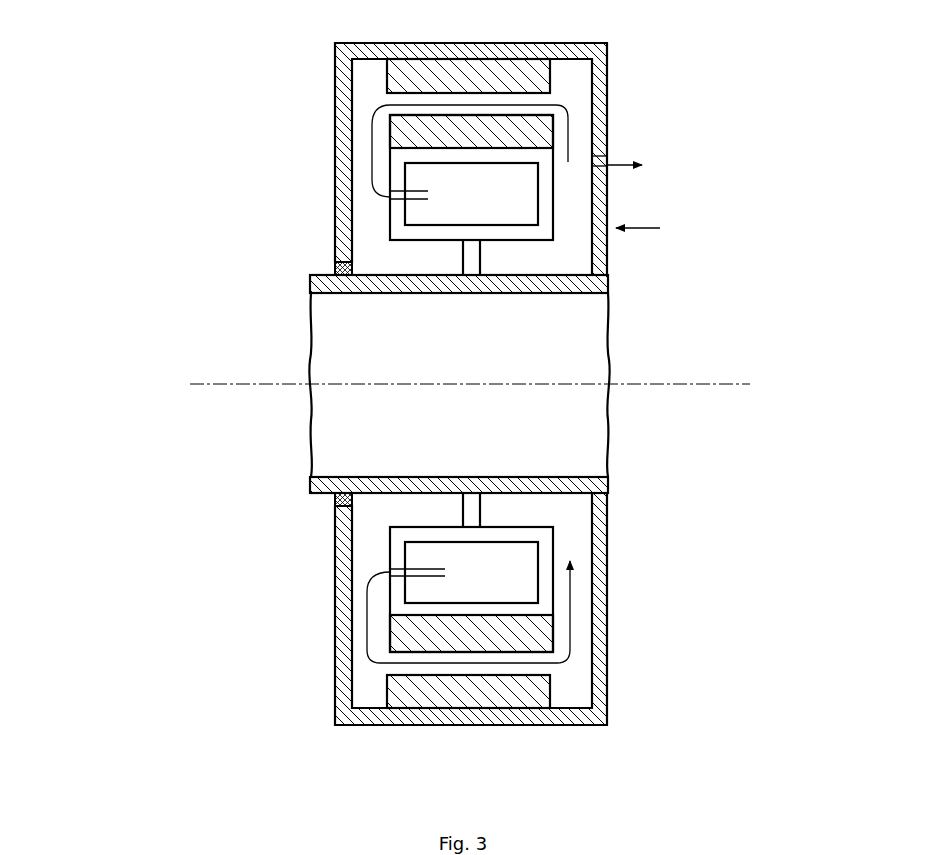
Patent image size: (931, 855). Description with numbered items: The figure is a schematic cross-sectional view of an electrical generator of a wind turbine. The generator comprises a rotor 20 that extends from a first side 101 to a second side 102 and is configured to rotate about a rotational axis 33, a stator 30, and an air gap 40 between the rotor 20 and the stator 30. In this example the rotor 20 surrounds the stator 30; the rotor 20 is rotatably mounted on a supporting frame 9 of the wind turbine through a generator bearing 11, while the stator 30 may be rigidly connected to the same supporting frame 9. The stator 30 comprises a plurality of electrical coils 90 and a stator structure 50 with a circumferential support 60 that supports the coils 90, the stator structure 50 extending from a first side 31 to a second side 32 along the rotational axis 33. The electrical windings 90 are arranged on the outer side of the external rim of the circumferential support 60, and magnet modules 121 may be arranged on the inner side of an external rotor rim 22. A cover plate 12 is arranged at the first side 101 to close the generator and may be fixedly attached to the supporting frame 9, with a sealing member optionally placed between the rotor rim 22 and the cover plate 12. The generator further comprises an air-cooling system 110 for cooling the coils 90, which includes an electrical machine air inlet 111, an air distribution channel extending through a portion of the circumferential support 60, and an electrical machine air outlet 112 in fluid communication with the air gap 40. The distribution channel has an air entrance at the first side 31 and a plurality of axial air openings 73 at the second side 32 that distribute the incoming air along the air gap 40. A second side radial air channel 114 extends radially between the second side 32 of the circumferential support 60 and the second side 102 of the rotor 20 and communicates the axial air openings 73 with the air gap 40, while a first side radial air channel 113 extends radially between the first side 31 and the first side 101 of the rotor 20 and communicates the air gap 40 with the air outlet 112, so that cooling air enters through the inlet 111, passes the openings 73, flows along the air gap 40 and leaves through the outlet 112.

The supporting frame 9 is at (340, 472).
The generator bearing 11 is at (330, 270).
The cover plate 12 is at (608, 75).
The rotor 20 is at (335, 608).
The external rotor rim 22 is at (575, 705).
The stator 30 is at (593, 597).
The first side 31 is at (592, 253).
The second side 32 is at (365, 226).
The rotational axis 33 is at (680, 383).
The air gap 40 is at (362, 103).
The stator structure 50 is at (487, 498).
The circumferential support 60 is at (555, 578).
The axial air openings 73 is at (390, 195).
The electrical coils 90 is at (575, 628).
The first side 101 is at (722, 419).
The second side 102 is at (150, 438).
The air-cooling system 110 is at (758, 137).
The electrical machine air inlet 111 is at (530, 213).
The electrical machine air outlet 112 is at (592, 158).
The first side radial air channel 113 is at (586, 123).
The second side radial air channel 114 is at (356, 152).
The magnet modules 121 is at (420, 690).